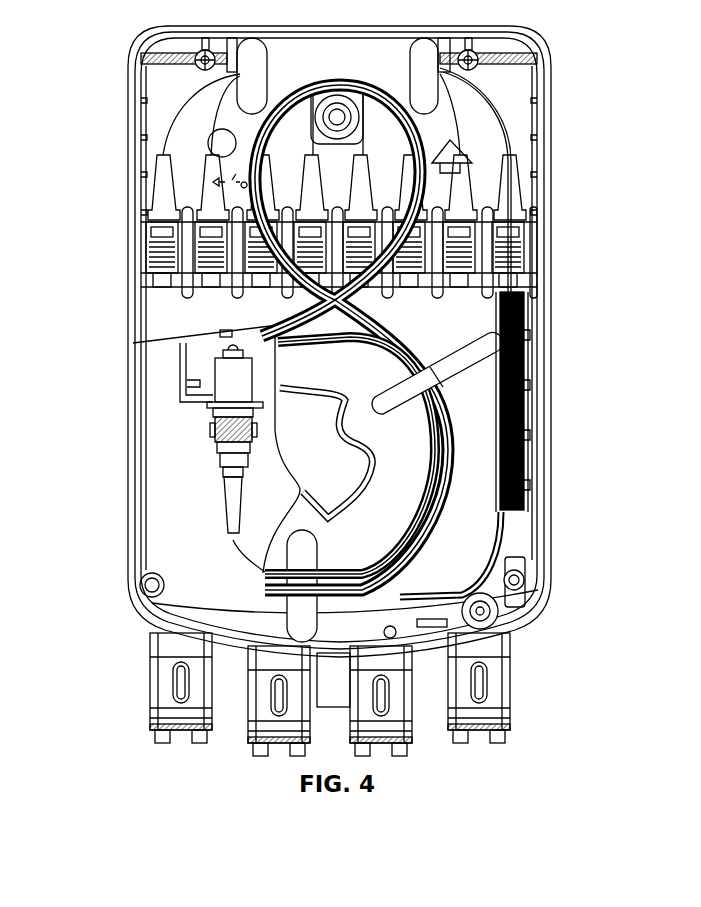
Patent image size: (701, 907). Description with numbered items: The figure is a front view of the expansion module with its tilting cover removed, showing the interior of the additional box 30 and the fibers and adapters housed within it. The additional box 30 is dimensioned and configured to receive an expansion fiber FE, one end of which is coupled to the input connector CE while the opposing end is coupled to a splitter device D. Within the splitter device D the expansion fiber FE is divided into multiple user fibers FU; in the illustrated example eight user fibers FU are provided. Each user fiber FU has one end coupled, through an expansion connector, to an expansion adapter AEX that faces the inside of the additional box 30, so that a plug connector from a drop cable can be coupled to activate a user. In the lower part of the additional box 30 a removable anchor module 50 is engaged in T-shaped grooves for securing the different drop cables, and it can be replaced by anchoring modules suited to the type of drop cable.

The additional box 30 is at (127, 92).
The expansion adapter AEX is at (147, 257).
The expansion fiber FE is at (484, 120).
The splitter device D is at (523, 383).
The input connector CE is at (213, 441).
The user fiber FU is at (517, 533).
The anchor module 50 is at (185, 740).